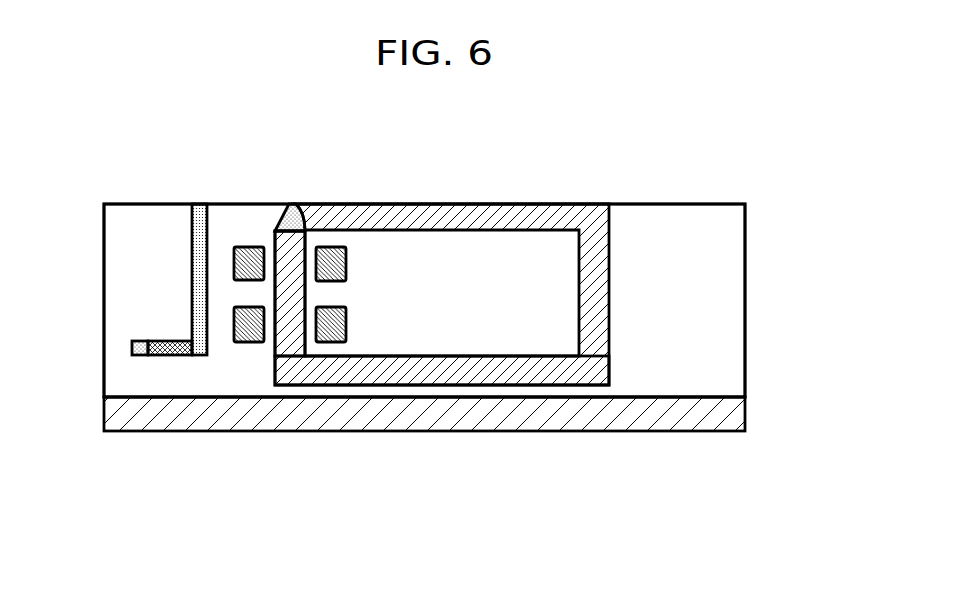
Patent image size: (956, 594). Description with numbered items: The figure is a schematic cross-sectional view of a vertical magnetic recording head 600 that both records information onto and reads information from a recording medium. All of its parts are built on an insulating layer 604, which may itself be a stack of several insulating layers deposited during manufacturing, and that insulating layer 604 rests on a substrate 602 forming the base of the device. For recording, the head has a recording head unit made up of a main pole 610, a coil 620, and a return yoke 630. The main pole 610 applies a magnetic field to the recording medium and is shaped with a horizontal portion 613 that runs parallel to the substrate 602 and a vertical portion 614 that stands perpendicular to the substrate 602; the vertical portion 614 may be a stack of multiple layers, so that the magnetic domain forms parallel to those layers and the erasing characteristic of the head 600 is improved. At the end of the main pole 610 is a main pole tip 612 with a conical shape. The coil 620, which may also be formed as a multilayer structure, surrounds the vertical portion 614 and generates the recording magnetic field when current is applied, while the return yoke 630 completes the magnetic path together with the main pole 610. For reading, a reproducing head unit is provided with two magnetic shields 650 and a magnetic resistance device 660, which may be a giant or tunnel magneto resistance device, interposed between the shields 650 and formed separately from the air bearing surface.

The vertical magnetic recording head 600 is at (105, 129).
The substrate 602 is at (738, 419).
The insulating layer 604 is at (735, 312).
The main pole 610 is at (428, 316).
The main pole tip 612 is at (285, 204).
The horizontal portion 613 is at (367, 368).
The vertical portion 614 is at (286, 342).
The coil 620 is at (237, 270).
The return yoke 630 is at (530, 222).
The magnetic shields 650 is at (140, 352).
The magnetic resistance device 660 is at (173, 340).